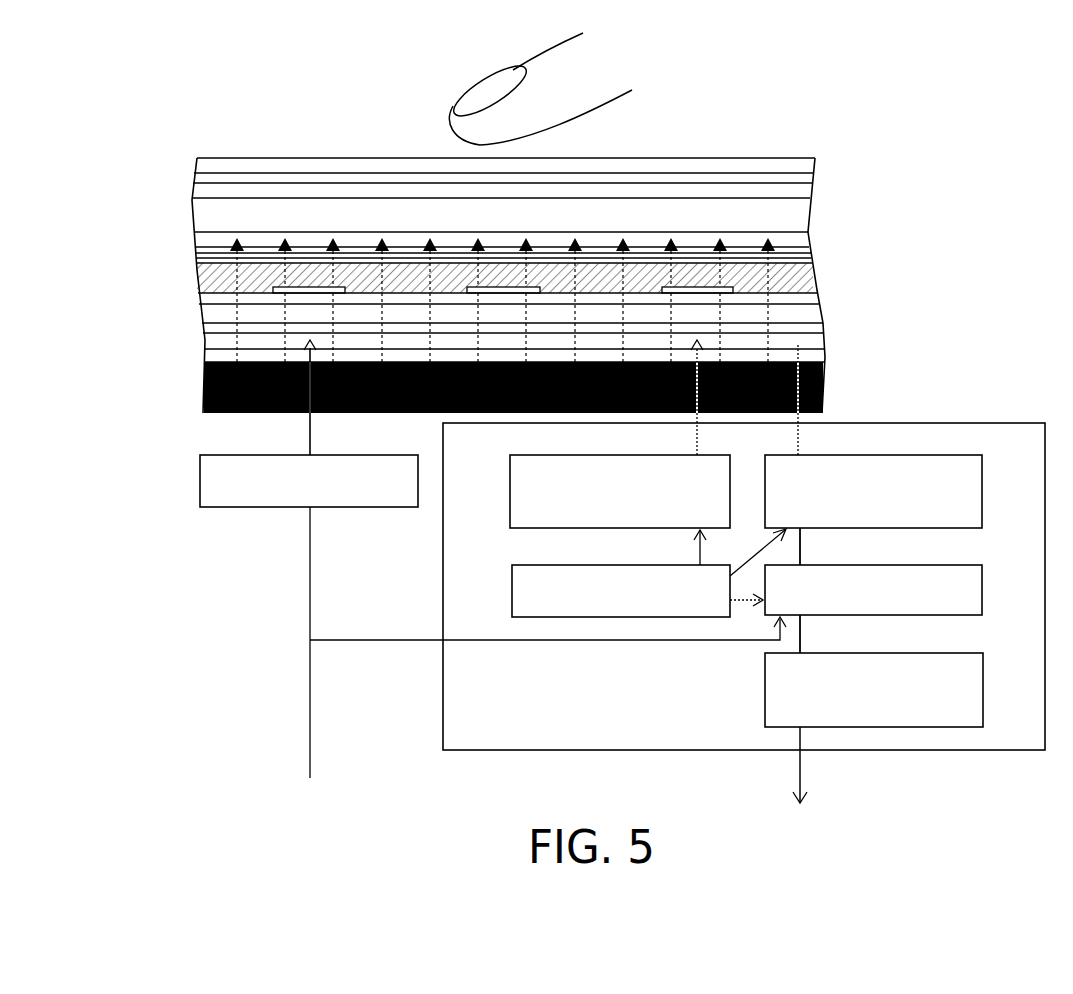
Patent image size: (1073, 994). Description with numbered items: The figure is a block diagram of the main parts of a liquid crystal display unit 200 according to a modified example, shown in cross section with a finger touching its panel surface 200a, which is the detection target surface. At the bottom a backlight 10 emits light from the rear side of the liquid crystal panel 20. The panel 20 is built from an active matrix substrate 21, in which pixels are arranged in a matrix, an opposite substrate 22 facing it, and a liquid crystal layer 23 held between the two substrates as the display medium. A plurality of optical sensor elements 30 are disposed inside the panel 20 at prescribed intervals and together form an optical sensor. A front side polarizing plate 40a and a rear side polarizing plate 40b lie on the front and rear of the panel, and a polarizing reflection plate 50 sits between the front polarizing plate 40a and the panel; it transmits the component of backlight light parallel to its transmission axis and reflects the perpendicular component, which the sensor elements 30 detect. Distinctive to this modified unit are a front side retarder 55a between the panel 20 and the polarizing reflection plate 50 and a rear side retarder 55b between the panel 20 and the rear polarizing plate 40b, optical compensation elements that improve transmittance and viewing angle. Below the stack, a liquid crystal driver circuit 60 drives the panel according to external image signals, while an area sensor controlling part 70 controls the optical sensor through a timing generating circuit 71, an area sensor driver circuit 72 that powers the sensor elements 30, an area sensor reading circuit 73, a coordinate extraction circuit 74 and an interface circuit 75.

The liquid crystal display unit 200 is at (983, 92).
The panel surface 200a is at (770, 158).
The optical sensor elements 30 is at (742, 250).
The front side polarizing plate 40a is at (808, 161).
The polarizing reflection plate 50 is at (805, 187).
The front side retarder 55a is at (806, 238).
The opposite substrate 22 is at (811, 258).
The liquid crystal layer 23 is at (813, 278).
The active matrix substrate 21 is at (538, 296).
The liquid crystal panel 20 is at (559, 276).
The rear side retarder 55b is at (810, 318).
The rear side polarizing plate 40b is at (810, 345).
The backlight 10 is at (812, 396).
The liquid crystal driver circuit 60 is at (200, 485).
The area sensor controlling part 70 is at (1030, 424).
The timing generating circuit 71 is at (512, 591).
The area sensor driver circuit 72 is at (510, 490).
The area sensor reading circuit 73 is at (983, 491).
The coordinate extraction circuit 74 is at (983, 590).
The interface circuit 75 is at (983, 690).